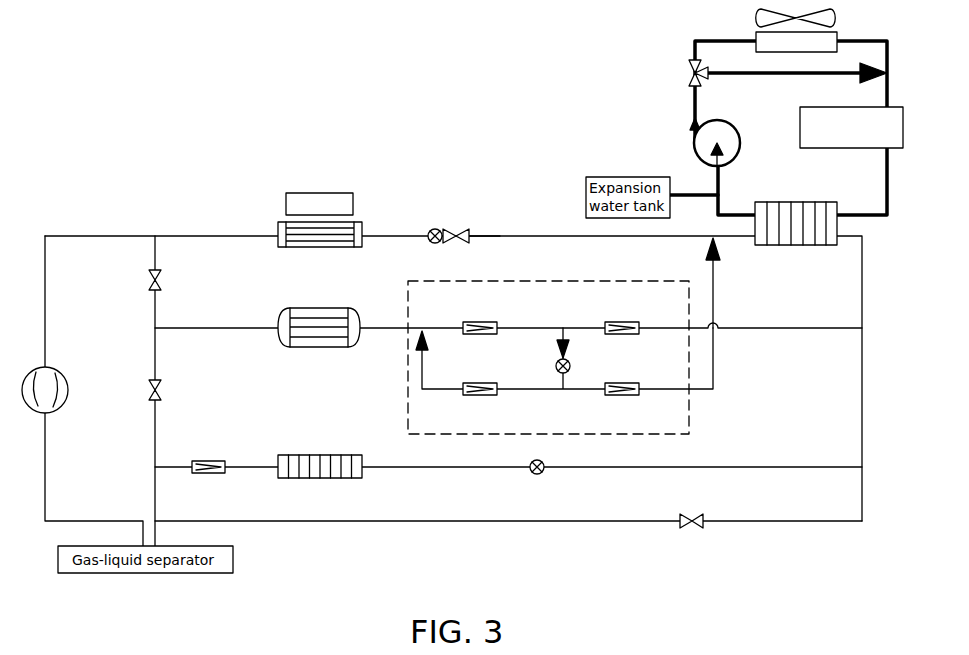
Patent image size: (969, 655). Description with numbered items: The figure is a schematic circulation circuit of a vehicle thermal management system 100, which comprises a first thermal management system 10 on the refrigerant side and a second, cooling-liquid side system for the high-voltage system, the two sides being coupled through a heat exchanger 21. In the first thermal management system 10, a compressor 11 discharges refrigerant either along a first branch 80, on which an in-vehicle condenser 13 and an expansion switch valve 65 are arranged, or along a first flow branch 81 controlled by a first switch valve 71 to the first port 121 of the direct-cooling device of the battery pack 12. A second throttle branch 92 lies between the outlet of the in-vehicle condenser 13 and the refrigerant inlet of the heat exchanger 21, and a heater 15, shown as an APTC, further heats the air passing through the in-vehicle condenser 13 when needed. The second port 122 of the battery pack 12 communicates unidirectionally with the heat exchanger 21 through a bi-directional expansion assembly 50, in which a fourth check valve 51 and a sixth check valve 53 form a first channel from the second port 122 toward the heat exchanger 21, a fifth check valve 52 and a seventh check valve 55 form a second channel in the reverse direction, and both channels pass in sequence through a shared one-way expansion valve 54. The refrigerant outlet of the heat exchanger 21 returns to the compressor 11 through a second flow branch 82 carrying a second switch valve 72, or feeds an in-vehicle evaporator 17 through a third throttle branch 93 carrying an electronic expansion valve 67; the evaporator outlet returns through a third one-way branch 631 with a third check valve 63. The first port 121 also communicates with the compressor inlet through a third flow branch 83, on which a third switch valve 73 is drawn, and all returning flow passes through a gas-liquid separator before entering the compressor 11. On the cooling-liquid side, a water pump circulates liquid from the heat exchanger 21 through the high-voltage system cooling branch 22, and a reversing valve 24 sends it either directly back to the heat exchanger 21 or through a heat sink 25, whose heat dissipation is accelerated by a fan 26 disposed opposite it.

The vehicle thermal management system 100 is at (383, 40).
The first thermal management system 10 is at (226, 207).
The compressor 11 is at (53, 381).
The battery pack 12 is at (348, 338).
The in-vehicle condenser 13 is at (358, 225).
The heater 15 is at (305, 193).
The in-vehicle evaporator 17 is at (358, 470).
The heat exchanger 21 is at (818, 205).
The high-voltage system cooling branch 22 is at (860, 107).
The reversing valve 24 is at (689, 73).
The heat sink 25 is at (756, 36).
The fan 26 is at (835, 12).
The bi-directional expansion assembly 50 is at (557, 305).
The fourth check valve 51 is at (497, 326).
The fifth check valve 52 is at (610, 325).
The sixth check valve 53 is at (624, 384).
The one-way expansion valve 54 is at (575, 365).
The seventh check valve 55 is at (470, 386).
The third check valve 63 is at (236, 472).
The third one-way branch 631 is at (253, 462).
The expansion switch valve 65 is at (452, 228).
The electronic expansion valve 67 is at (540, 474).
The first switch valve 71 is at (160, 287).
The second switch valve 72 is at (693, 515).
The third switch valve 73 is at (160, 397).
The first branch 80 is at (195, 232).
The first flow branch 81 is at (152, 327).
The second flow branch 82 is at (742, 520).
The third flow branch 83 is at (155, 365).
The second throttle branch 92 is at (500, 232).
The third throttle branch 93 is at (580, 470).
The first port 121 is at (280, 321).
The second port 122 is at (359, 319).